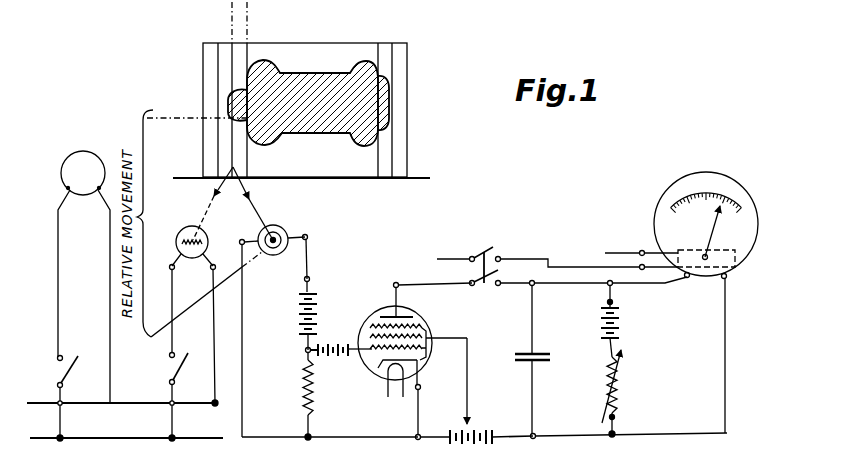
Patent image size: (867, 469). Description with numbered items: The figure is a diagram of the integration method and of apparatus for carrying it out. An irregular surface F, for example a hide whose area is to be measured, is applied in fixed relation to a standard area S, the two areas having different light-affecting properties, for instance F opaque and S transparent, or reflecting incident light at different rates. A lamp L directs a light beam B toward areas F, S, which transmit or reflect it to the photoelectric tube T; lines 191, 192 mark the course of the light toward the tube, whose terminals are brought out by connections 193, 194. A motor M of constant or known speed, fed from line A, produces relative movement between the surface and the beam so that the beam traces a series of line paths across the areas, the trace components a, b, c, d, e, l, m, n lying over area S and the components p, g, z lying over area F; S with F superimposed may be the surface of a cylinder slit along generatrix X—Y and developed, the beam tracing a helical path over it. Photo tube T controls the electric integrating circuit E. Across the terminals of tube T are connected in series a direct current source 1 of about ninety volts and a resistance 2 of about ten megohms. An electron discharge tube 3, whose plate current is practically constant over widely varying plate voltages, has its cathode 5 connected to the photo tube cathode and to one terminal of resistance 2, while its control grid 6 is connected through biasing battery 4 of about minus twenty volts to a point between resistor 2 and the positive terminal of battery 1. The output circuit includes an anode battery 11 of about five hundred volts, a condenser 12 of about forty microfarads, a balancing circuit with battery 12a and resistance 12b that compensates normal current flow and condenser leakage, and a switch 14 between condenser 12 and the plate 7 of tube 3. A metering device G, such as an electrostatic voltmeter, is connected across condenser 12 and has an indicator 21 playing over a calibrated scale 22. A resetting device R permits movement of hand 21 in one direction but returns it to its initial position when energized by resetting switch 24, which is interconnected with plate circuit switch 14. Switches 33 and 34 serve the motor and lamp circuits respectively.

The generatrix X is at (301, 189).
The generatrix Y is at (417, 191).
The irregular surface F is at (280, 80).
The standard area S is at (343, 50).
The trace component e is at (217, 50).
The trace component c is at (232, 63).
The trace component d is at (218, 79).
The trace component p is at (228, 100).
The trace component g is at (230, 118).
The trace component b is at (232, 143).
The trace component a is at (248, 160).
The trace component m is at (383, 50).
The trace component n is at (390, 66).
The trace component z is at (385, 98).
The trace component l is at (383, 147).
The light beam B is at (246, 205).
The motor M is at (84, 277).
The light source L is at (187, 228).
The photoelectric tube T is at (283, 234).
The optical axis line 191 is at (195, 310).
The optical axis line 192 is at (222, 334).
The photocell lead 193 is at (247, 283).
The photocell lead 194 is at (312, 257).
The direct current source 1 is at (318, 314).
The resistance 2 is at (314, 398).
The electron discharge tube 3 is at (402, 361).
The biasing battery 4 is at (346, 358).
The cathode 5 is at (422, 381).
The control grid 6 is at (378, 368).
The plate 7 is at (391, 309).
The anode battery 11 is at (482, 447).
The electric integrating circuit E is at (489, 369).
The resetting switch 24 is at (506, 246).
The plate circuit switch 14 is at (482, 286).
The condenser 12 is at (543, 355).
The balancing battery 12a is at (625, 323).
The balancing resistance 12b is at (620, 385).
The metering device G is at (711, 213).
The calibrated scale 22 is at (735, 203).
The indicator 21 is at (716, 229).
The resetting device R is at (735, 254).
The motor switch 33 is at (58, 383).
The lamp switch 34 is at (170, 381).
The line A is at (125, 420).